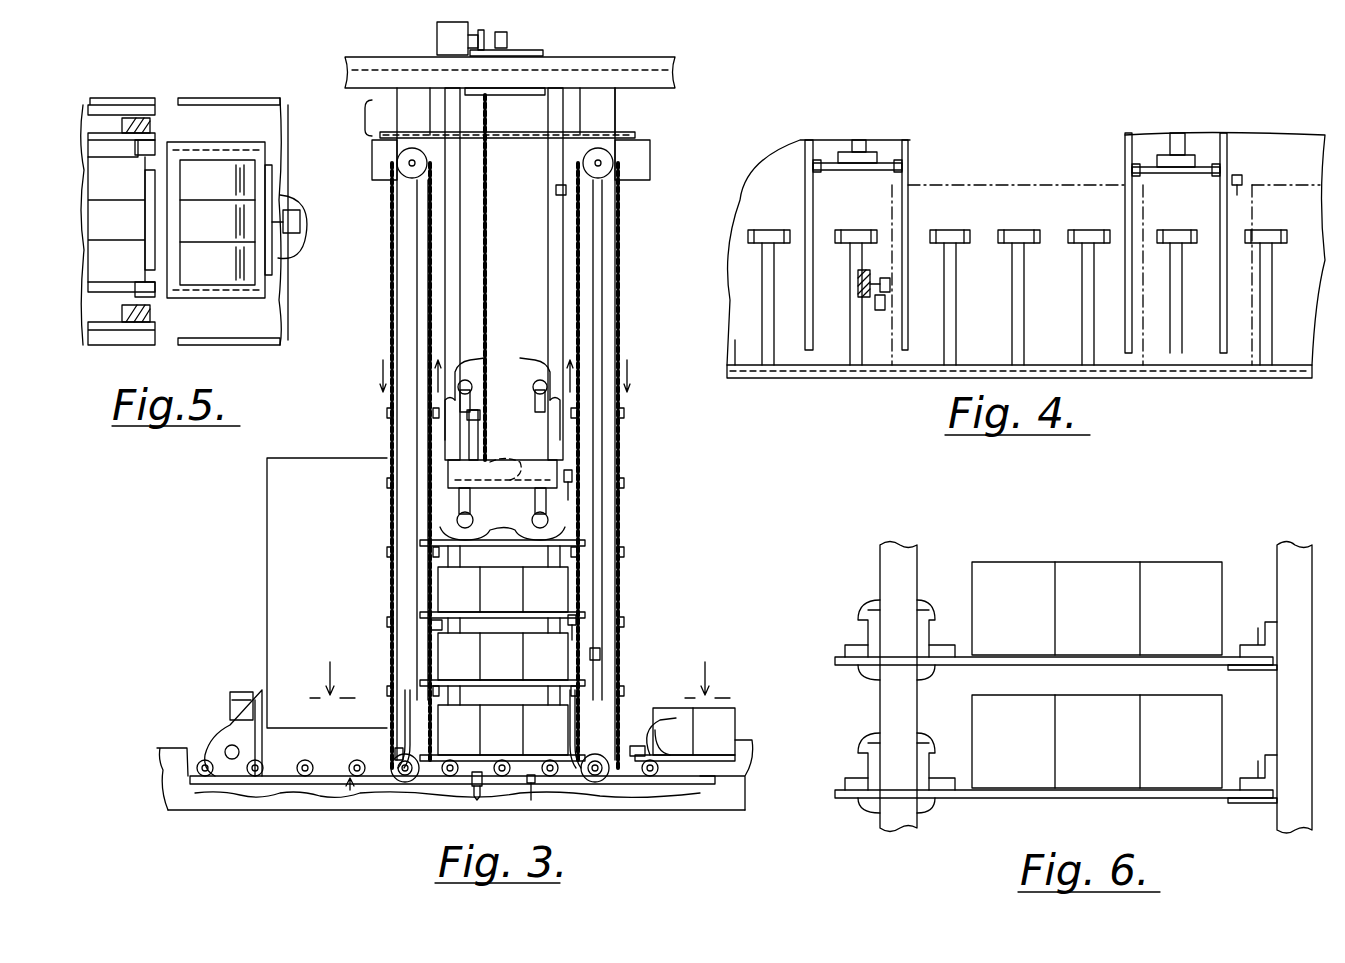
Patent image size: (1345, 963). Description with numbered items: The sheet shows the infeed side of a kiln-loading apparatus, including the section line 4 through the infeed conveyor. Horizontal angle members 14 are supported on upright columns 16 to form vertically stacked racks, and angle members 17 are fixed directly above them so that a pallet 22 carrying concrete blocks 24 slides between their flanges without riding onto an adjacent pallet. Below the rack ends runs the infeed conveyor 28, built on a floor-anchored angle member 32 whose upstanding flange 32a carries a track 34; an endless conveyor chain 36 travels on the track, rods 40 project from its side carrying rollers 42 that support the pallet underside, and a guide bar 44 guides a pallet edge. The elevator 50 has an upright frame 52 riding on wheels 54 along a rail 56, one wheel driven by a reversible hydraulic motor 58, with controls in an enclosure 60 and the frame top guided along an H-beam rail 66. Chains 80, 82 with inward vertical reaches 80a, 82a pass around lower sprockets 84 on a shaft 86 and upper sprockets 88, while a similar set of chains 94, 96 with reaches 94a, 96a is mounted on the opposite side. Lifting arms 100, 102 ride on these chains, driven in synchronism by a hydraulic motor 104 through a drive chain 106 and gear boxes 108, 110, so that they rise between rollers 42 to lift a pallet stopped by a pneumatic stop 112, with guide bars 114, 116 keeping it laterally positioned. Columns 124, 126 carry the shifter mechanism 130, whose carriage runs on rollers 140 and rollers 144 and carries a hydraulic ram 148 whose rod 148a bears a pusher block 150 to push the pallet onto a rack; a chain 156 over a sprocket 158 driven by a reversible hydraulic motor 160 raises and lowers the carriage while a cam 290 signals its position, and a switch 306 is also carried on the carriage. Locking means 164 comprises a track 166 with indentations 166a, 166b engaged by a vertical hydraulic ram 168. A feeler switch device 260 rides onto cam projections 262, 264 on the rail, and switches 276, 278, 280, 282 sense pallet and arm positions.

In FIG. 3, the section line 4- 4 is at (520, 670).
In FIG. 5, the angle members 14 is at (105, 98).
In FIG. 6, the angle members 14 is at (920, 686).
In FIG. 5, the upright columns 16 is at (150, 128).
In FIG. 6, the upright columns 16 is at (900, 832).
In FIG. 5, the angle members 17 is at (88, 145).
In FIG. 6, the angle members 17 is at (920, 603).
In FIG. 3, the pallets 22 is at (500, 752).
In FIG. 5, the pallets 22 is at (160, 220).
In FIG. 4, the pallets 22 is at (1022, 185).
In FIG. 6, the pallets 22 is at (1030, 665).
In FIG. 3, the concrete blocks 24 is at (540, 702).
In FIG. 5, the concrete blocks 24 is at (88, 215).
In FIG. 6, the concrete blocks 24 is at (1100, 562).
In FIG. 3, the infeed conveyor 28 is at (752, 797).
In FIG. 4, the infeed conveyor 28 is at (814, 410).
In FIG. 3, the angle member 32 is at (708, 805).
In FIG. 3, the upstanding flange 32a is at (730, 770).
In FIG. 4, the track 34 is at (742, 362).
In FIG. 4, the conveyor chain 36 is at (727, 368).
In FIG. 4, the rods 40 is at (862, 262).
In FIG. 3, the rollers 42 is at (262, 766).
In FIG. 4, the rollers 42 is at (855, 230).
In FIG. 3, the guide bar 44 is at (740, 744).
In FIG. 4, the guide bar 44 is at (750, 378).
In FIG. 3, the elevator 50 is at (369, 355).
In FIG. 3, the frame 52 is at (616, 110).
In FIG. 3, the wheels 54 is at (225, 735).
In FIG. 3, the rail 56 is at (170, 795).
In FIG. 3, the reversible hydraulic motor 58 is at (238, 692).
In FIG. 3, the enclosure 60 is at (267, 600).
In FIG. 3, the H-beam rail 66 is at (600, 57).
In FIG. 3, the chain 80 is at (622, 298).
In FIG. 4, the chain 80 is at (1212, 175).
In FIG. 3, the vertical reach 80a is at (577, 300).
In FIG. 3, the chain 82 is at (622, 236).
In FIG. 3, the vertical reach 82a is at (576, 238).
In FIG. 3, the sprockets 84 is at (630, 750).
In FIG. 4, the sprockets 84 is at (1150, 160).
In FIG. 4, the shaft 86 is at (1180, 135).
In FIG. 3, the sprockets 88 is at (613, 163).
In FIG. 3, the chain 94 is at (396, 300).
In FIG. 4, the chain 94 is at (890, 172).
In FIG. 3, the inwardly facing reach 94a is at (432, 300).
In FIG. 3, the chain 96 is at (392, 238).
In FIG. 3, the inwardly facing reach 96a is at (447, 232).
In FIG. 3, the lifting arms 100 is at (575, 478).
In FIG. 5, the lifting arms 100 is at (284, 335).
In FIG. 4, the lifting arms 100 is at (1220, 212).
In FIG. 3, the lifting arms 102 is at (430, 625).
In FIG. 5, the lifting arms 102 is at (282, 105).
In FIG. 4, the lifting arms 102 is at (900, 340).
In FIG. 3, the hydraulic motor 104 is at (380, 103).
In FIG. 3, the drive chain 106 is at (380, 132).
In FIG. 3, the gear box 108 is at (380, 182).
In FIG. 3, the gear box 110 is at (645, 148).
In FIG. 3, the pneumatic shock absorbing stop 112 is at (395, 752).
In FIG. 4, the pneumatic shock absorbing stop 112 is at (890, 280).
In FIG. 3, the guide bar 114 is at (411, 729).
In FIG. 3, the guide bar 116 is at (594, 729).
In FIG. 3, the column 124 is at (460, 153).
In FIG. 3, the column 126 is at (548, 170).
In FIG. 3, the shifter mechanism 130 is at (440, 496).
In FIG. 3, the rollers 140 is at (475, 358).
In FIG. 3, the rollers 144 is at (470, 385).
In FIG. 3, the hydraulic ram 148 is at (535, 462).
In FIG. 5, the hydraulic ram 148 is at (292, 233).
In FIG. 5, the rod 148a is at (292, 205).
In FIG. 3, the pusher block 150 is at (528, 482).
In FIG. 5, the pusher block 150 is at (292, 262).
In FIG. 3, the chain 156 is at (488, 115).
In FIG. 3, the sprocket 158 is at (501, 32).
In FIG. 3, the reversible hydraulic motor 160 is at (437, 30).
In FIG. 3, the locking means 164 is at (446, 806).
In FIG. 3, the track 166 is at (245, 798).
In FIG. 3, the indentation 166a is at (480, 795).
In FIG. 3, the indentation 166b is at (300, 795).
In FIG. 3, the hydraulic ram 168 is at (477, 772).
In FIG. 3, the feeler switch device 260 is at (538, 755).
In FIG. 3, the cam projection 262 is at (531, 800).
In FIG. 3, the cam projection 264 is at (350, 793).
In FIG. 3, the normally-closed switch 276 is at (625, 735).
In FIG. 4, the normally-closed switch 276 is at (1238, 175).
In FIG. 4, the normally-open switch 278 is at (885, 310).
In FIG. 3, the normally-open switch 280 is at (556, 190).
In FIG. 3, the normally-open switch 282 is at (600, 654).
In FIG. 3, the cam 290 is at (507, 40).
In FIG. 3, the rod 306 is at (540, 460).